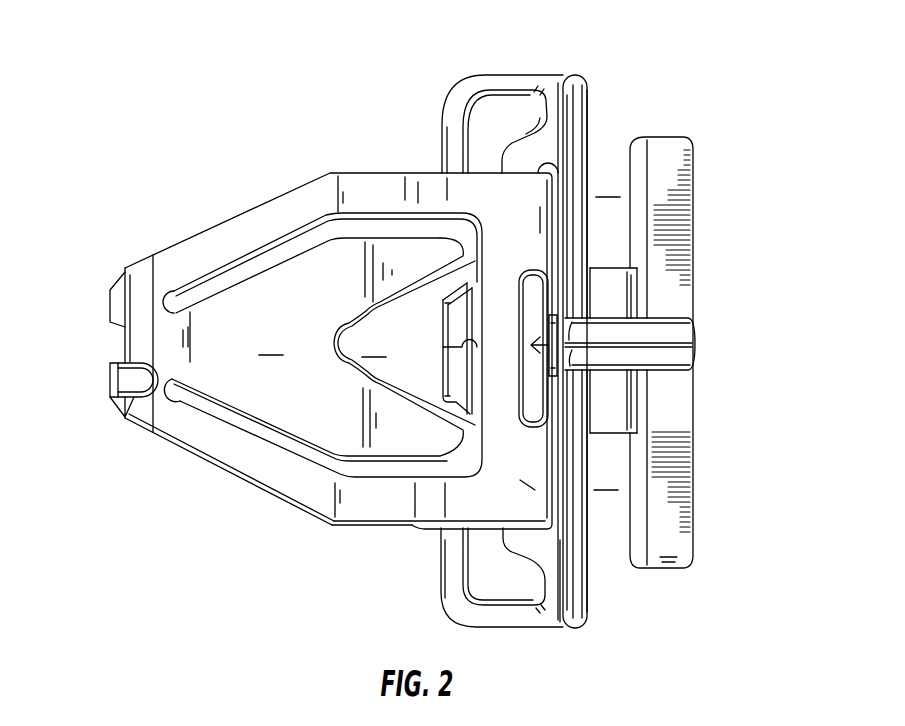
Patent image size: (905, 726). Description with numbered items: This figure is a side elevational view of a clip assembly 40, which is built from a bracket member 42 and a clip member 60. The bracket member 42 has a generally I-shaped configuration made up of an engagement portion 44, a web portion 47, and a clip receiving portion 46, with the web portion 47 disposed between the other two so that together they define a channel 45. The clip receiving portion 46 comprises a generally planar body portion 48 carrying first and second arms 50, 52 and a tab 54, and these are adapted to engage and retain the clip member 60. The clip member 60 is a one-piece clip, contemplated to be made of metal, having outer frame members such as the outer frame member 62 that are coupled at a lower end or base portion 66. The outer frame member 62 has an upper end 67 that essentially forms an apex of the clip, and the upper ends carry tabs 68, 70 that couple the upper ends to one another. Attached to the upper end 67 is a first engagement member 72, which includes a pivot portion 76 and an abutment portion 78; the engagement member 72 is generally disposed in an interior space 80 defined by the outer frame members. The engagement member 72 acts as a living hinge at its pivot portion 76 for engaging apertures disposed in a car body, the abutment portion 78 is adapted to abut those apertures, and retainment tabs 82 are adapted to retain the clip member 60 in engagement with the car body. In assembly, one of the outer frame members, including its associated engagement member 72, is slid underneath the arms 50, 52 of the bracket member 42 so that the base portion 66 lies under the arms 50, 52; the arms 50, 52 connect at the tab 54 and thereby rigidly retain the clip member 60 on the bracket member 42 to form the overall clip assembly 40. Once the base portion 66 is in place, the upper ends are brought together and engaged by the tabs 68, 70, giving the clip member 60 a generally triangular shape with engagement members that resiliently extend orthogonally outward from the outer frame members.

The clip assembly 40 is at (307, 99).
The bracket member 42 is at (580, 66).
The engagement portion 44 is at (697, 134).
The channel 45 is at (630, 330).
The clip receiving portion 46 is at (594, 118).
The web portion 47 is at (608, 288).
The body portion 48 is at (560, 607).
The first arm 50 is at (453, 568).
The second arm 52 is at (498, 74).
The tab 54 is at (462, 368).
The clip member 60 is at (240, 205).
The outer frame member 62 is at (222, 447).
The base portion 66 is at (528, 485).
The upper end 67 is at (134, 339).
The tab 68 is at (117, 302).
The tab 70 is at (132, 384).
The first engagement member 72 is at (271, 342).
The pivot portion 76 is at (177, 368).
The abutment portion 78 is at (367, 270).
The interior space 80 is at (374, 344).
The retainment tab 82 is at (441, 258).